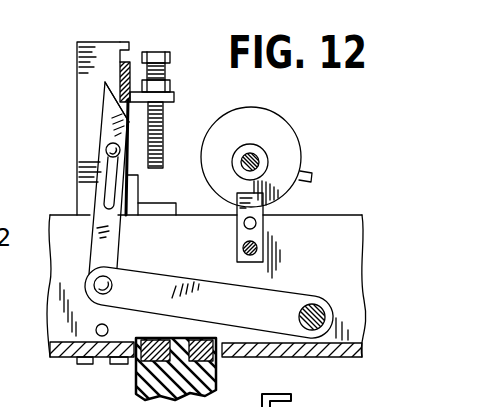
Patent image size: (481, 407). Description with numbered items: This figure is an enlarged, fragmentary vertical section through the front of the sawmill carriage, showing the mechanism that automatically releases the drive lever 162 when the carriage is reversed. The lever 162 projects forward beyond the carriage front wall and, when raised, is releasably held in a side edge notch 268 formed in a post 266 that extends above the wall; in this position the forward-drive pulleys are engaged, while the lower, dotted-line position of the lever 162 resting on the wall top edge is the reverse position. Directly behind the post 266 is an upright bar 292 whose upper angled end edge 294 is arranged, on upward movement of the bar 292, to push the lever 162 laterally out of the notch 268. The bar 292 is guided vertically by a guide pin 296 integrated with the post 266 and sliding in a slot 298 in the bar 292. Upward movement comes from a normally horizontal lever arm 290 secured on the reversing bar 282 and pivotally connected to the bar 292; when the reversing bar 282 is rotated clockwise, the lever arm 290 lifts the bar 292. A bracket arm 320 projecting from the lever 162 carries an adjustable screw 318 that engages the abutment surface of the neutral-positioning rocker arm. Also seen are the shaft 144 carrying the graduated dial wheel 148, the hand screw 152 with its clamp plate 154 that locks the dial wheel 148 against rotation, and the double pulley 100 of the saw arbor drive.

The double pulley 100 is at (143, 387).
The shaft 144 is at (251, 156).
The dial wheel 148 is at (280, 130).
The hand screw 152 is at (266, 214).
The clamp plate 154 is at (245, 235).
The lever 162 is at (130, 60).
The post 266 is at (83, 116).
The side edge notch 268 is at (118, 52).
The reversing bar 282 is at (314, 338).
The lever arm 290 is at (232, 315).
The upright bar 292 is at (97, 210).
The upper angled end edge 294 is at (104, 95).
The guide pin 296 is at (106, 150).
The slot 298 is at (103, 192).
The adjustable screw 318 is at (168, 52).
The bracket arm 320 is at (174, 97).